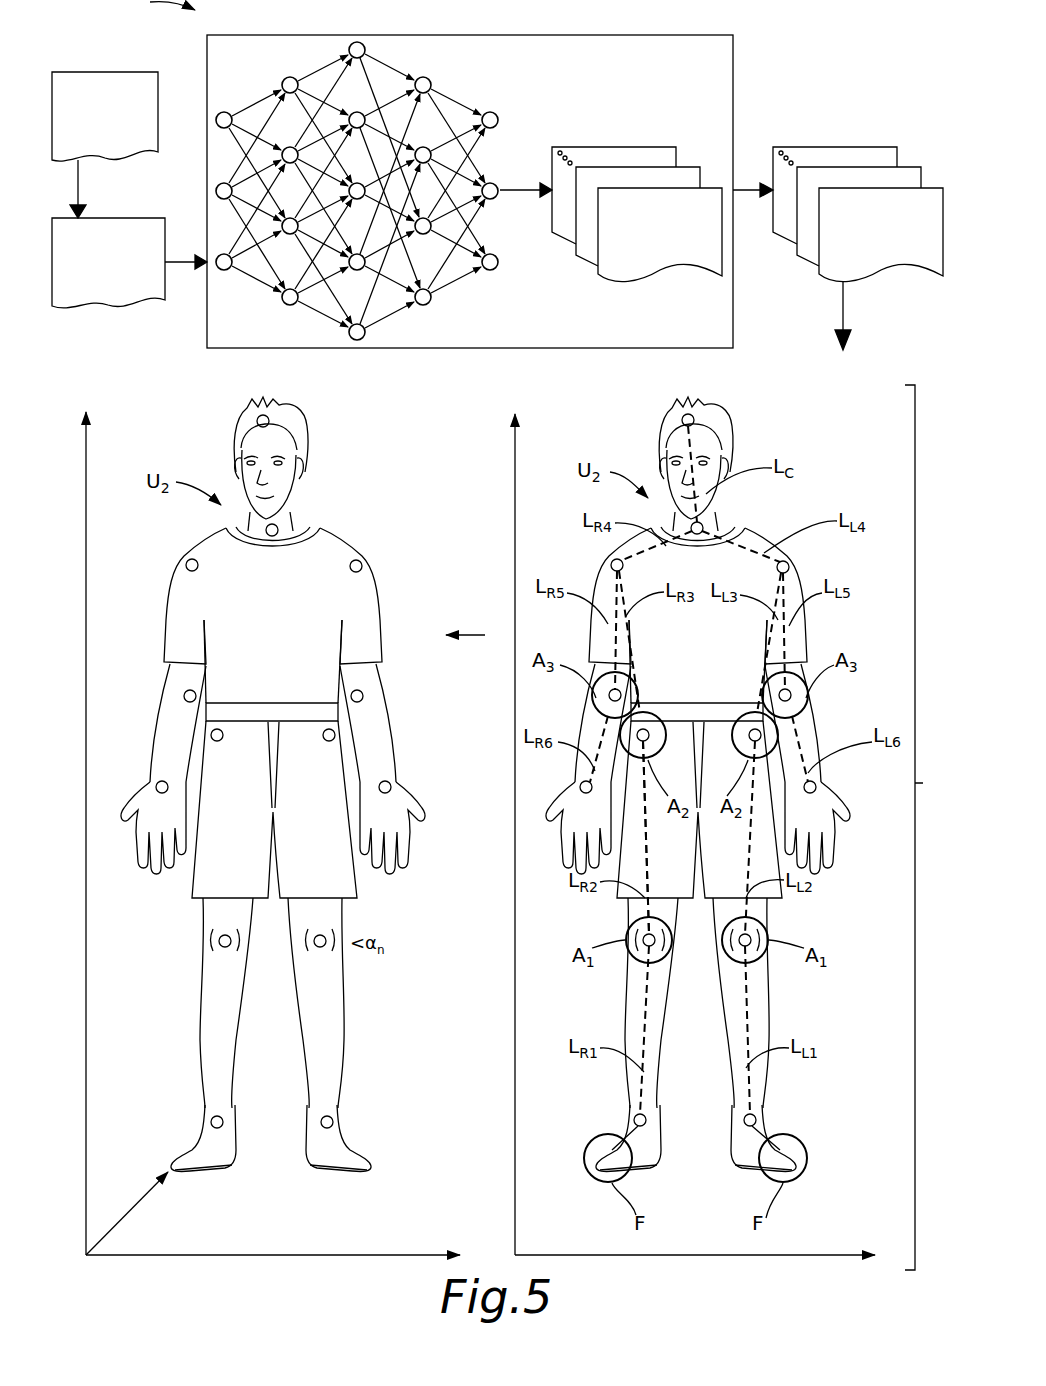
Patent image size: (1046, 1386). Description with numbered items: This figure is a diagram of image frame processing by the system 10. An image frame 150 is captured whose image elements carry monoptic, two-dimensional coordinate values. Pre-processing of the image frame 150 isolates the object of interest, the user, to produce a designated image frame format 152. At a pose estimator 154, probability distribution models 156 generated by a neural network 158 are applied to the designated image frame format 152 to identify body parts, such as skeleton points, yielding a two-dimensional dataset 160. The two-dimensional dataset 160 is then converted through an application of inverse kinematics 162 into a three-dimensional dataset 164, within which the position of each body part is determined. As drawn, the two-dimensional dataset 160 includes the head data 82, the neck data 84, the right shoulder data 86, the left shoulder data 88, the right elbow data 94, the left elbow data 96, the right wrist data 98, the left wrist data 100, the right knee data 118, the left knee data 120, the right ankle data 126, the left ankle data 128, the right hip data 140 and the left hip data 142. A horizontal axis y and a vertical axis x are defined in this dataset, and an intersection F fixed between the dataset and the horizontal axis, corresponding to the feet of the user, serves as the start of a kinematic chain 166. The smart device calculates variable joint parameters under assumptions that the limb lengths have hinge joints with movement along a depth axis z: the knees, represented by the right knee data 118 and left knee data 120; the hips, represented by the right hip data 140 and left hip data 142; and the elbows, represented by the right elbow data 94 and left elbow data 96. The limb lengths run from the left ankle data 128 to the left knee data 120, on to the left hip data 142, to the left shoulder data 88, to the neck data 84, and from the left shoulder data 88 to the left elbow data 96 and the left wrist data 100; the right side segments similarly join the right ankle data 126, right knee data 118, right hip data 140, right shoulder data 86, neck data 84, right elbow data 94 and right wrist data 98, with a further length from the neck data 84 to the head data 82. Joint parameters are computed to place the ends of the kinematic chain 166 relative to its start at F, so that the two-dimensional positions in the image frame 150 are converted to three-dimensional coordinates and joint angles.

The motion capture system 10 is at (157, 5).
The image frame 150 is at (88, 72).
The designated image frame format 152 is at (118, 218).
The pose estimator 154 is at (740, 30).
The probability distribution models 156 is at (626, 147).
The neural network 158 is at (434, 306).
The two-dimensional dataset 160 is at (845, 147).
The inverse kinematics 162 is at (880, 374).
The three-dimensional dataset 164 is at (483, 392).
The kinematic chain 166 is at (764, 866).
The head data 82 is at (269, 421).
The neck data 84 is at (278, 528).
The right shoulder data 86 is at (188, 560).
The left shoulder data 88 is at (360, 561).
The right elbow data 94 is at (189, 690).
The left elbow data 96 is at (358, 690).
The right wrist data 98 is at (158, 782).
The left wrist data 100 is at (389, 783).
The right hip data 140 is at (211, 734).
The left hip data 142 is at (335, 734).
The right knee data 118 is at (222, 948).
The left knee data 120 is at (322, 948).
The right ankle data 126 is at (213, 1116).
The left ankle data 128 is at (330, 1116).